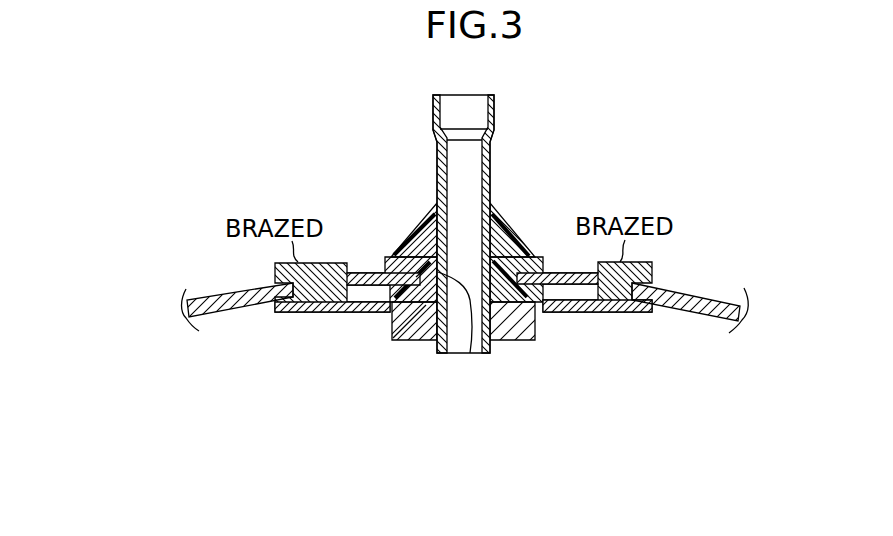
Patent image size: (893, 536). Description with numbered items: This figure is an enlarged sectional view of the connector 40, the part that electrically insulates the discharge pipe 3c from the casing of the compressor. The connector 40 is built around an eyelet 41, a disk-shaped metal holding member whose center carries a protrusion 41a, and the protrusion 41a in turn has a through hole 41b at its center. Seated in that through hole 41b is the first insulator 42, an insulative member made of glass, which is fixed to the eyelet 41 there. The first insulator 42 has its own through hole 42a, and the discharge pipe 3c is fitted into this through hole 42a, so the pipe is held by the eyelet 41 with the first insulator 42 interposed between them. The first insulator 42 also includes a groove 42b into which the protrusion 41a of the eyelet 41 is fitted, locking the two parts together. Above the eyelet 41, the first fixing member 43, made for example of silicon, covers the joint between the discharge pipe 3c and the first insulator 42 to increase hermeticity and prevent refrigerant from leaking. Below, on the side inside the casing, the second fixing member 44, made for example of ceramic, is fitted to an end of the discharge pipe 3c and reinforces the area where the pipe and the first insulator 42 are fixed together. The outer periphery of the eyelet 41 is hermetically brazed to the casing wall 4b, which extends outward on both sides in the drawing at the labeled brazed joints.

The discharge pipe 3c is at (496, 119).
The connector 40 is at (607, 184).
The eyelet 41 is at (613, 313).
The protrusion 41a is at (365, 265).
The through hole 41b is at (416, 277).
The first insulator 42 is at (372, 310).
The through hole 42a is at (470, 353).
The groove 42b is at (405, 307).
The first fixing member 43 is at (513, 223).
The second fixing member 44 is at (522, 340).
The heat transfer plate 4b is at (697, 288).